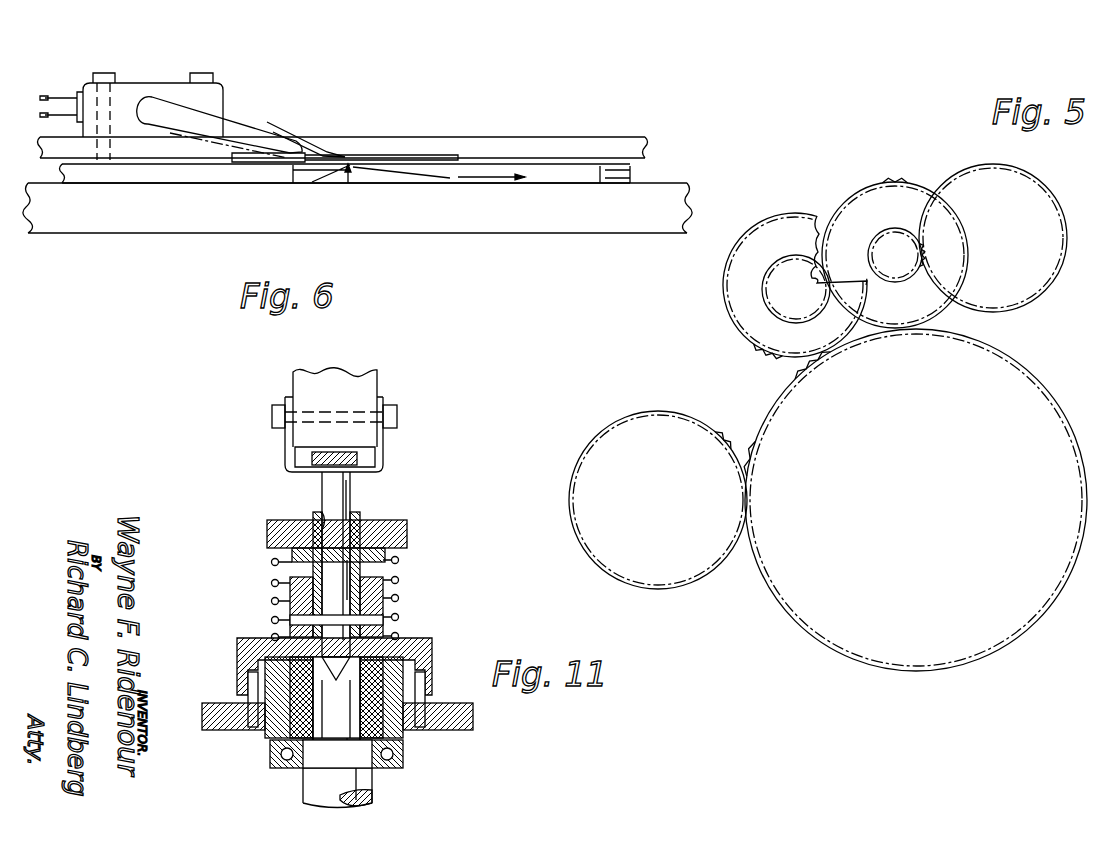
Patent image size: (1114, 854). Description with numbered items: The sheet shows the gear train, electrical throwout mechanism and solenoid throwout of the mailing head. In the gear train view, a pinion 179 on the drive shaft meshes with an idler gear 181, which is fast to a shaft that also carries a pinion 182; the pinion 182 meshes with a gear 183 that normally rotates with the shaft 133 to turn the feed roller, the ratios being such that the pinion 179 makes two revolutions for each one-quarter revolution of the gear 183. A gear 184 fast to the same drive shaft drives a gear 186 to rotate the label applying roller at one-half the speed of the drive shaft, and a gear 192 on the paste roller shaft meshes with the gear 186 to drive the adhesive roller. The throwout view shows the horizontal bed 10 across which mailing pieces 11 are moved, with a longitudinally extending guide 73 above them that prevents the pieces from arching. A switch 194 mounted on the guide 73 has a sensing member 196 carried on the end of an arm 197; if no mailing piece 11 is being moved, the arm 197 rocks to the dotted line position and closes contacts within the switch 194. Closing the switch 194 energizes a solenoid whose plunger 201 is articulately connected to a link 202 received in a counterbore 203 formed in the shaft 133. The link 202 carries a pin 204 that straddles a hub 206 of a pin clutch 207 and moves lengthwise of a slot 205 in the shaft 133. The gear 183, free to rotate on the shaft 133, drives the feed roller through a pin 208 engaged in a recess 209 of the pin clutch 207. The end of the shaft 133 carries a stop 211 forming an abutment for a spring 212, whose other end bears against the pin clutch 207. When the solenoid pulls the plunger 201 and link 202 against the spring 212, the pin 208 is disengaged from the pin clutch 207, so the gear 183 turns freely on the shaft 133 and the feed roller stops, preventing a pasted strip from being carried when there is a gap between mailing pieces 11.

In FIG. 6, the horizontal bed 10 is at (495, 214).
In FIG. 6, the mailing piece 11 is at (172, 170).
In FIG. 6, the longitudinally extending guide 73 is at (508, 148).
In FIG. 6, the switch 194 is at (166, 88).
In FIG. 6, the sensing member 196 is at (363, 180).
In FIG. 6, the arm 197 is at (238, 124).
In FIG. 5, the pinion 179 is at (762, 273).
In FIG. 5, the idler gear 181 is at (920, 171).
In FIG. 5, the pinion 182 is at (900, 228).
In FIG. 5, the gear 183 is at (1062, 210).
In FIG. 11, the gear 183 is at (436, 712).
In FIG. 5, the gear 184 is at (740, 312).
In FIG. 5, the gear 186 is at (1060, 382).
In FIG. 5, the gear 192 is at (658, 430).
In FIG. 11, the shaft 133 is at (357, 515).
In FIG. 11, the plunger 201 is at (372, 388).
In FIG. 11, the link 202 is at (352, 483).
In FIG. 11, the counterbore 203 is at (320, 512).
In FIG. 11, the pin 204 is at (375, 620).
In FIG. 11, the slot 205 is at (280, 600).
In FIG. 11, the hub 206 is at (398, 590).
In FIG. 11, the pin clutch 207 is at (432, 648).
In FIG. 11, the pin 208 is at (246, 700).
In FIG. 11, the recess 209 is at (246, 676).
In FIG. 11, the stop 211 is at (395, 522).
In FIG. 11, the spring 212 is at (272, 562).